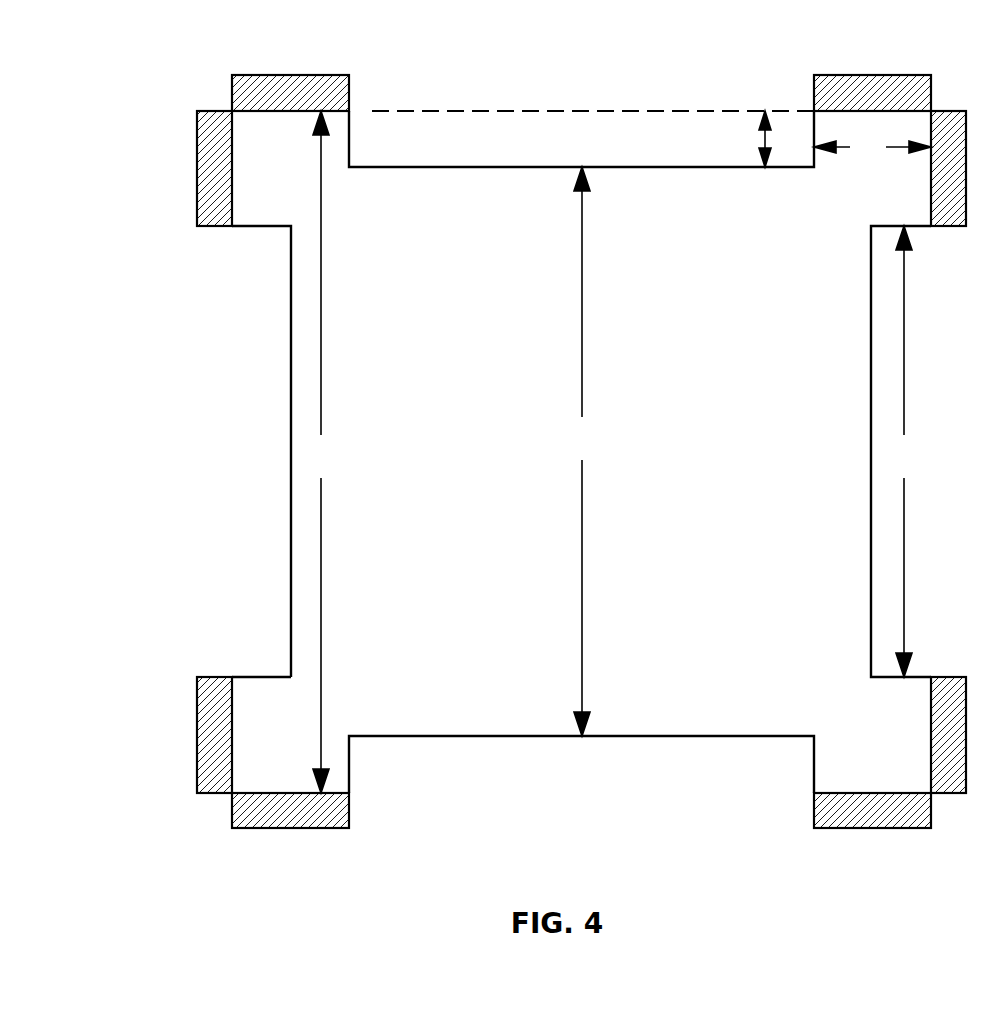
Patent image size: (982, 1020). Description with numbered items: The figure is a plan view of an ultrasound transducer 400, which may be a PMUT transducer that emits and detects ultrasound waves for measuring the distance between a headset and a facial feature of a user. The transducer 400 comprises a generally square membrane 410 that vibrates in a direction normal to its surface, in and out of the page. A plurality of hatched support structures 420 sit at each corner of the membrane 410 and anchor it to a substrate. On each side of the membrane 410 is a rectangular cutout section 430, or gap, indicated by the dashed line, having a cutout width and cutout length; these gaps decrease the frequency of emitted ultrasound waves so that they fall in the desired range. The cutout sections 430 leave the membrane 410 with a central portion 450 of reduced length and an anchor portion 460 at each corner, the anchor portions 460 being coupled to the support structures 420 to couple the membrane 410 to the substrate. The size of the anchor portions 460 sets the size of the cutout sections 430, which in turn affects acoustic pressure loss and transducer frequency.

The ultrasound transducer 400 is at (505, 438).
The membrane 410 is at (291, 400).
The support structure 420 is at (197, 188).
The cutout section 430 is at (523, 137).
The central portion 450 is at (478, 736).
The anchor portion 460 is at (268, 677).